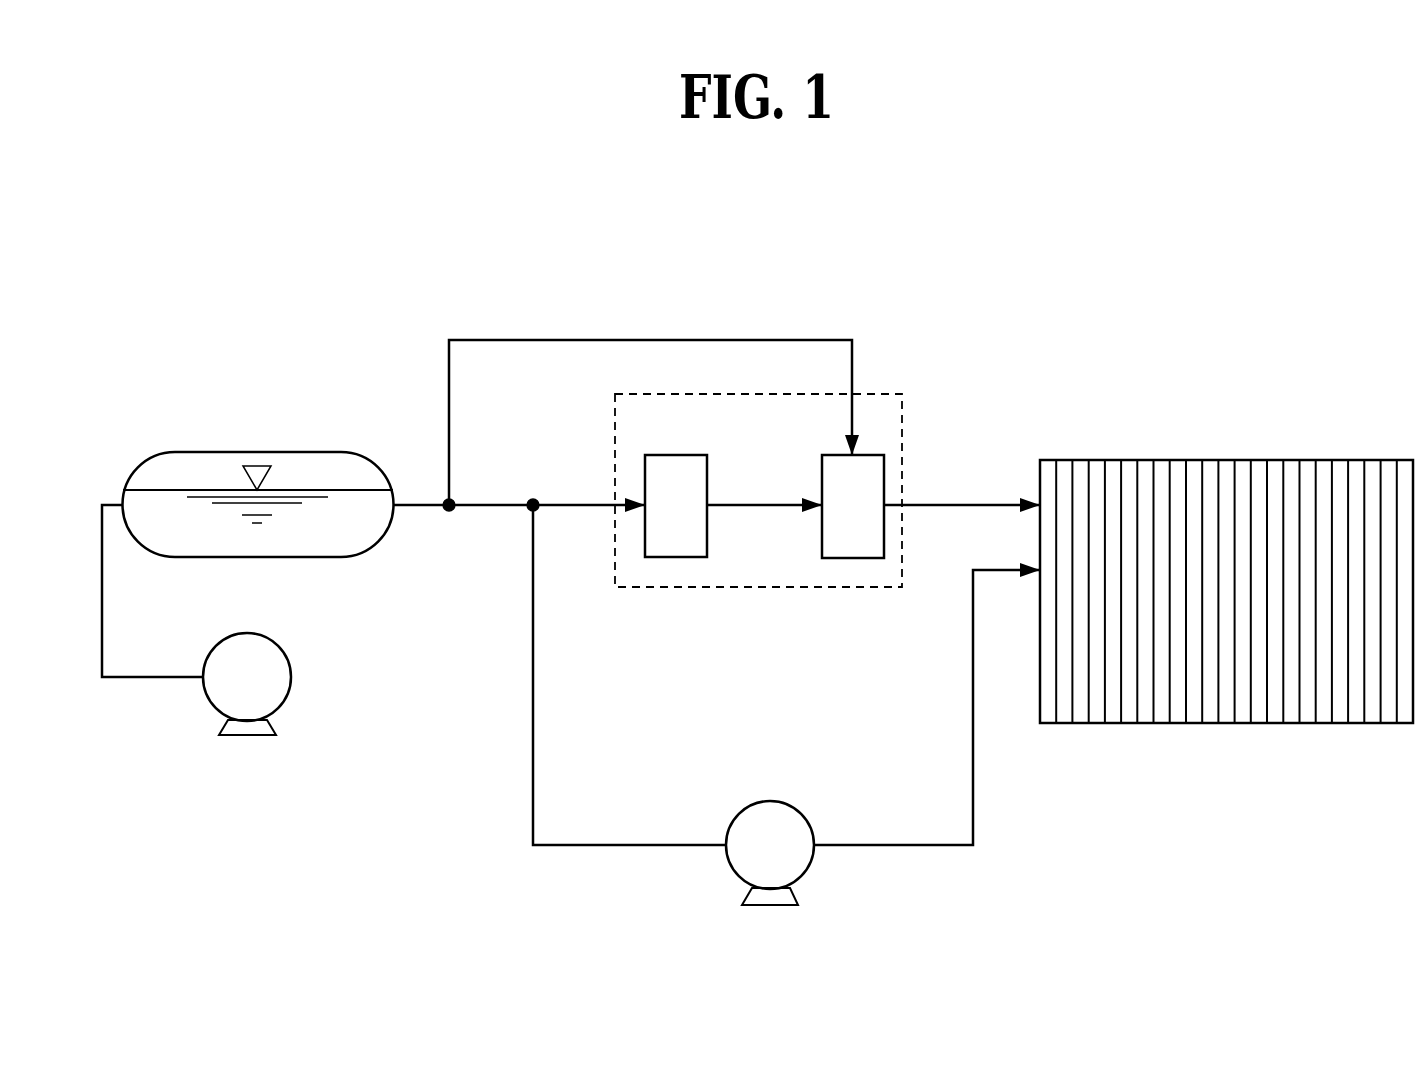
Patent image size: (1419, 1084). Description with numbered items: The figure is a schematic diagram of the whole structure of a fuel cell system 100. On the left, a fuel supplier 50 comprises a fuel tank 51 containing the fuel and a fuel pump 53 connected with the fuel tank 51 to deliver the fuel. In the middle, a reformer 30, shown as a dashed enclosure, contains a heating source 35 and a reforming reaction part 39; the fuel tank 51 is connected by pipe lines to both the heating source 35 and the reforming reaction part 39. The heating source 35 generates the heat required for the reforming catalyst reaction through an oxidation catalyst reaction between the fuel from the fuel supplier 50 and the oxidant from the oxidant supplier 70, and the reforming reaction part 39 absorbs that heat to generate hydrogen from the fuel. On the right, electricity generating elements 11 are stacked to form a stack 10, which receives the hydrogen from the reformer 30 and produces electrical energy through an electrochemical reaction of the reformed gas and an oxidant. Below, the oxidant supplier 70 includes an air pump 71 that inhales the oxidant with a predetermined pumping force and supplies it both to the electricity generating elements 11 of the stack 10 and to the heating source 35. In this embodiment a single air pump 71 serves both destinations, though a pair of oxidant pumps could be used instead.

The fuel cell system 100 is at (784, 241).
The stack 10 is at (1226, 592).
The electricity generating elements 11 is at (1094, 724).
The reformer 30 is at (874, 393).
The heating source 35 is at (690, 455).
The reforming reaction part 39 is at (864, 455).
The fuel supplier 50 is at (146, 754).
The fuel tank 51 is at (190, 557).
The fuel pump 53 is at (258, 634).
The oxidant supplier 70 is at (828, 884).
The air pump 71 is at (782, 801).